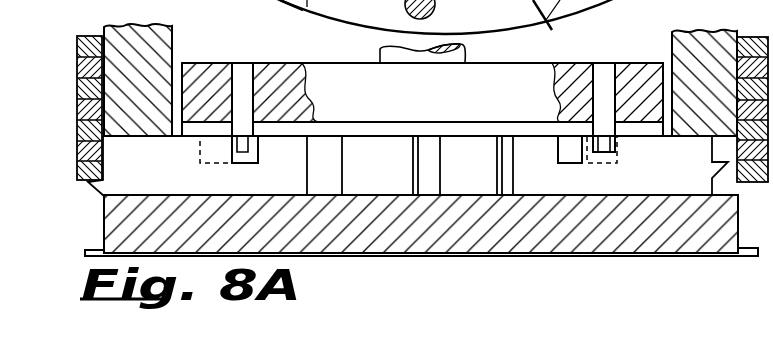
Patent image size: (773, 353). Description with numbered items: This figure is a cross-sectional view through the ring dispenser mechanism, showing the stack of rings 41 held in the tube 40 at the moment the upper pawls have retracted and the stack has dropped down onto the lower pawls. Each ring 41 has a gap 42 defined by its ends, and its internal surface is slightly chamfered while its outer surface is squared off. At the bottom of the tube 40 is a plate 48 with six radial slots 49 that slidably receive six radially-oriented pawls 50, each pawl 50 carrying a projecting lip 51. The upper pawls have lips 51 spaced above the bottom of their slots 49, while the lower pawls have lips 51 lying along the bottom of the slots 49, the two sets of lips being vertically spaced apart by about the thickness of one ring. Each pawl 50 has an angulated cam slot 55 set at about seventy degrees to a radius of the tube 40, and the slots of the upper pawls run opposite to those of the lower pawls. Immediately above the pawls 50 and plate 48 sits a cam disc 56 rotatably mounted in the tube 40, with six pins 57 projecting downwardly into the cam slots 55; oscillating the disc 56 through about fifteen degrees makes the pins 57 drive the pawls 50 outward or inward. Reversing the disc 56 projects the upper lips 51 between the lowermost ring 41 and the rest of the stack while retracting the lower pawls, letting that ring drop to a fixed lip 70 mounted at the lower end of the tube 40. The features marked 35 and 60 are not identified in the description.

The pivot arrow / assembly 35 is at (537, 279).
The tube 40 is at (703, 47).
The ring 41 is at (767, 13).
The gap 42 is at (765, 209).
The plate 48 is at (453, 243).
The radial slot 49 is at (727, 190).
The pawl 50 is at (408, 166).
The projecting lip 51 is at (104, 183).
The angulated cam slot 55 is at (257, 163).
The cam disc 56 is at (422, 99).
The pin 57 is at (247, 63).
The pad 60 is at (466, 47).
The fixed lip 70 is at (758, 257).